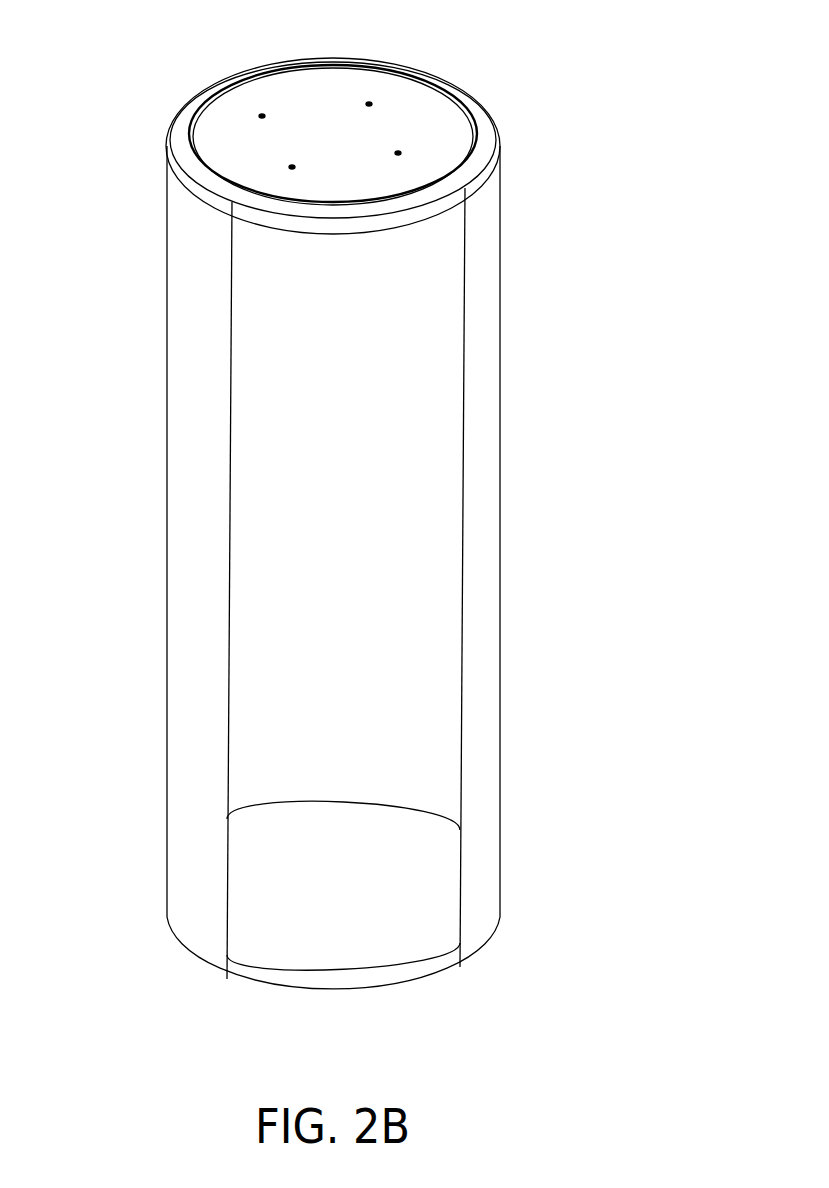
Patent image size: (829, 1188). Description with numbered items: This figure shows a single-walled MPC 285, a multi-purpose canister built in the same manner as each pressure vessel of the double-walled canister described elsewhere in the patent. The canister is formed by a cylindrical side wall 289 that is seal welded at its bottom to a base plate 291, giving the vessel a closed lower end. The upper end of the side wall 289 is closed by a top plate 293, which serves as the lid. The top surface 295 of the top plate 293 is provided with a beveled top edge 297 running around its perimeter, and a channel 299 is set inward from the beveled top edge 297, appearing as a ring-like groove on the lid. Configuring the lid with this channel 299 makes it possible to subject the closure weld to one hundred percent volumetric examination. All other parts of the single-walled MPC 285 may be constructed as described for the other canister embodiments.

The single-walled MPC 285 is at (600, 111).
The side wall 289 is at (490, 438).
The base plate 291 is at (428, 977).
The top plate 293 is at (458, 80).
The top surface 295 is at (270, 85).
The beveled top edge 297 is at (265, 213).
The channel 299 is at (187, 122).